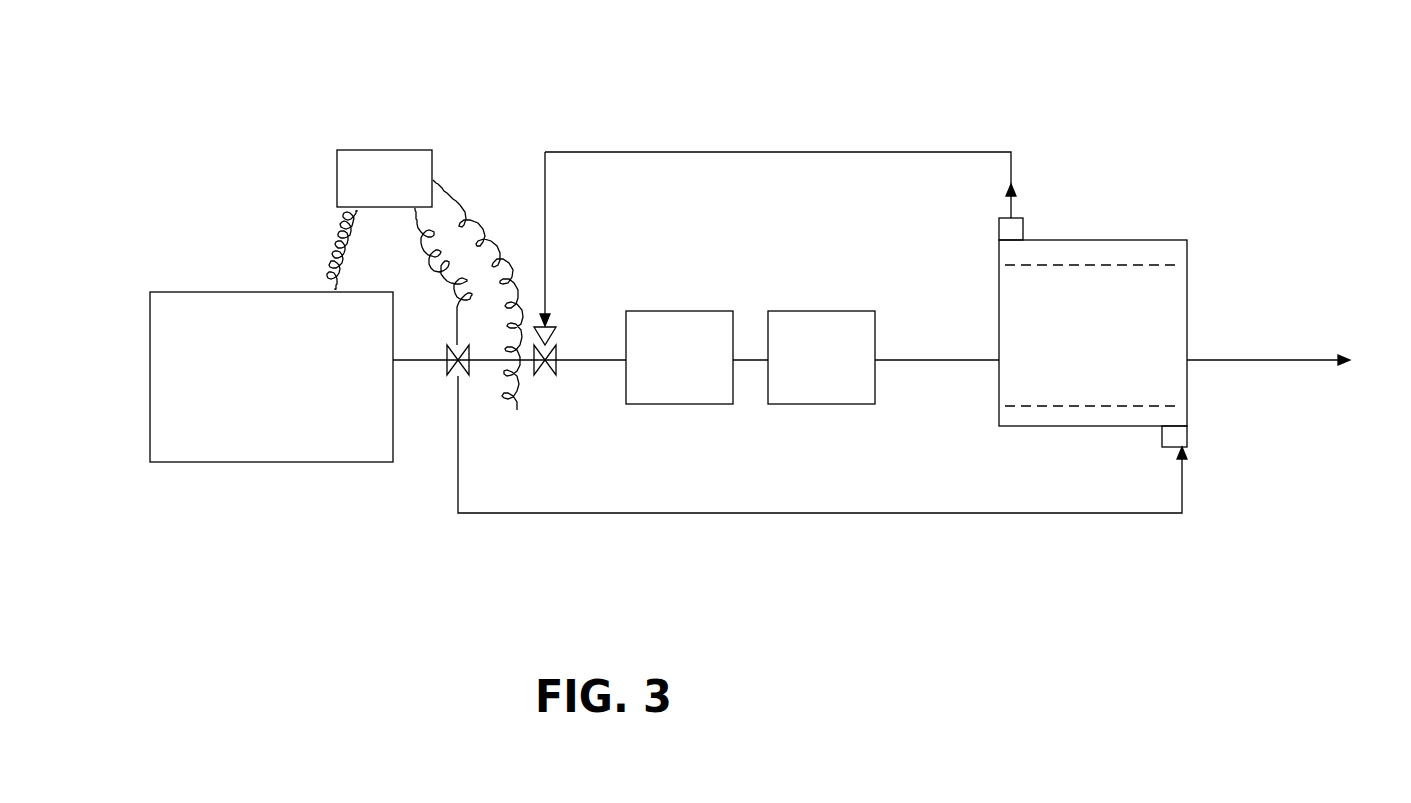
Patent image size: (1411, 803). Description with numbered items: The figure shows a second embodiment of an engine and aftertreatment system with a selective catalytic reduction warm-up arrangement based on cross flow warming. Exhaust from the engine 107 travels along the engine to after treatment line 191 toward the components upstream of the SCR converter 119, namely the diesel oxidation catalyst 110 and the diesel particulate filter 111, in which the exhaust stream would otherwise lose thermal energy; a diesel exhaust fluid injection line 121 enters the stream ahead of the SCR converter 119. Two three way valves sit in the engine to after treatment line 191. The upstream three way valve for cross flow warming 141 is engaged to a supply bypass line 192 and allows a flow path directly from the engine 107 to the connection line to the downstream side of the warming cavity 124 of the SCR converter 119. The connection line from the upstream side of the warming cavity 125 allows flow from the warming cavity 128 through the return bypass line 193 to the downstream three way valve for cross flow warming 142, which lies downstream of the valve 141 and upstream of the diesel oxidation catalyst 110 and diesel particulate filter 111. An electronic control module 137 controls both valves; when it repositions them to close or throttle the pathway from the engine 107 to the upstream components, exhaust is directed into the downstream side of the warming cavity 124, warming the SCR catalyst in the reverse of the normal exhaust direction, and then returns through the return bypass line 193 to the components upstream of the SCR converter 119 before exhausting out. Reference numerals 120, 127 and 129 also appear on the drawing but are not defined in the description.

The engine 107 is at (195, 292).
The electronic control module 137 is at (402, 150).
The diesel oxidation catalyst 110 is at (668, 311).
The diesel particulate filter 111 is at (845, 311).
The selective catalytic reduction converter 119 is at (1172, 240).
The exhaust outlet 120 is at (1295, 361).
The diesel exhaust fluid injection line 121 is at (962, 352).
The connection line to downstream side of warming cavity 124 is at (1187, 437).
The connection line from upstream side of warming cavity 125 is at (1025, 238).
The downstream catalyst portion 127 is at (1097, 406).
The warming cavity 128 is at (1120, 250).
The upstream catalyst portion 129 is at (1078, 240).
The upstream three way valve for cross flow warming 141 is at (456, 376).
The downstream three way valve for cross flow warming 142 is at (547, 377).
The engine to after treatment line 191 is at (406, 368).
The supply bypass line 192 is at (800, 525).
The return bypass line 193 is at (757, 140).